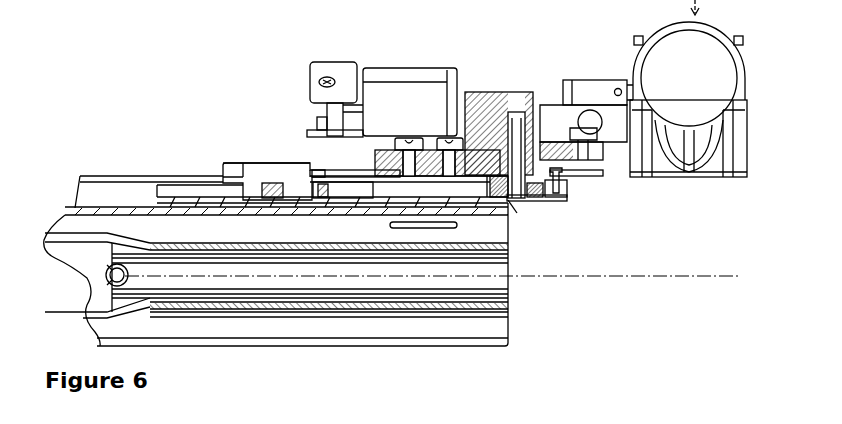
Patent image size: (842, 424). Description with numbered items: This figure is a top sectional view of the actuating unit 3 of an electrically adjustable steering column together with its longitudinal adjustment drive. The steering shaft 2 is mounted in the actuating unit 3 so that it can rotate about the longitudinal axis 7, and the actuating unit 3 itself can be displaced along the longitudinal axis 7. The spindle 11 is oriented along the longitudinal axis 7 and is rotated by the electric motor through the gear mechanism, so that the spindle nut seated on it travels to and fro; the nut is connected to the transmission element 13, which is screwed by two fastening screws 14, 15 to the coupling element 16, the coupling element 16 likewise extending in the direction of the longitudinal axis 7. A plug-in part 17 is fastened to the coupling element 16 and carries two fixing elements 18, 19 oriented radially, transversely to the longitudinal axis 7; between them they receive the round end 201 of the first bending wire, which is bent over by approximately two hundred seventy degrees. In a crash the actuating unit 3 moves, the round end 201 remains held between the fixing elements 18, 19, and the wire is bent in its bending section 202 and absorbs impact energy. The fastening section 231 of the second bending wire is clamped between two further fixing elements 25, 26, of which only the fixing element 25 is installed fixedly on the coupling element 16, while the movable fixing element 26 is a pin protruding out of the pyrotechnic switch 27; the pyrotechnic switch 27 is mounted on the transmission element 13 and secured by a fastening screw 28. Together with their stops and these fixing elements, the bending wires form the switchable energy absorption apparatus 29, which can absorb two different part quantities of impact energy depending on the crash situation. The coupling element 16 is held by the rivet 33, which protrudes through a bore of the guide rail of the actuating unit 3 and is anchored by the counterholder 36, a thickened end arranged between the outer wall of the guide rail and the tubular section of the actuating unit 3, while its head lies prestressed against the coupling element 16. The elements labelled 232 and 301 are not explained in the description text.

The steering shaft 2 is at (338, 308).
The actuating unit 3 is at (452, 350).
The longitudinal axis 7 is at (696, 278).
The spindle 11 is at (552, 118).
The transmission element 13 is at (407, 97).
The fastening screw 14 is at (452, 158).
The fastening screw 15 is at (412, 158).
The coupling element 16 is at (378, 165).
The plug-in part 17 is at (288, 165).
The fixing element 18 is at (300, 170).
The fixing element 19 is at (270, 185).
The movable fixing element 26 is at (514, 130).
The pyrotechnic switch 27 is at (478, 104).
The fastening screw 28 is at (580, 136).
The switchable energy absorption apparatus 29 is at (216, 160).
The rivet 33 is at (567, 183).
The counterholder 36 is at (565, 190).
The round end 201 is at (273, 200).
The bending section 202 is at (322, 200).
The fastening section 231 is at (510, 205).
The second clamping nut 232 is at (541, 200).
The fixing element 25 is at (500, 204).
The locking bolt 301 is at (563, 197).